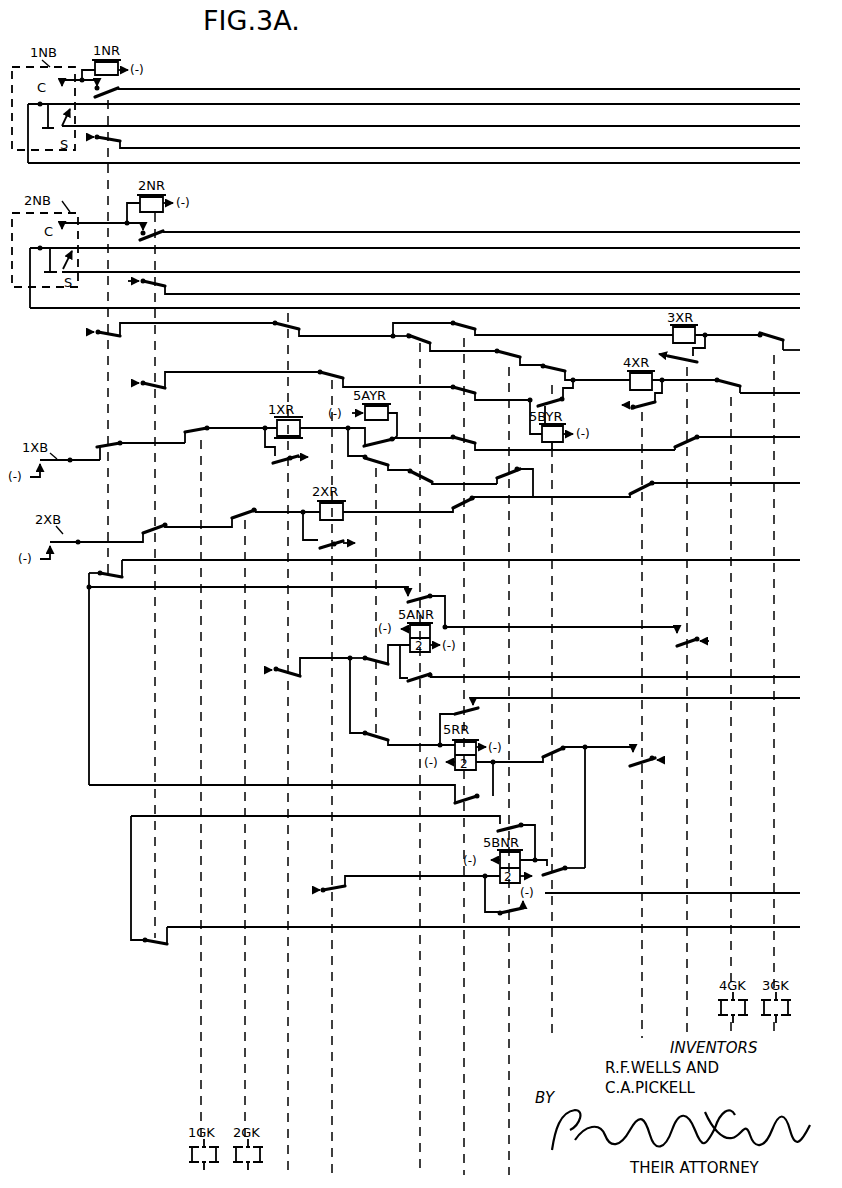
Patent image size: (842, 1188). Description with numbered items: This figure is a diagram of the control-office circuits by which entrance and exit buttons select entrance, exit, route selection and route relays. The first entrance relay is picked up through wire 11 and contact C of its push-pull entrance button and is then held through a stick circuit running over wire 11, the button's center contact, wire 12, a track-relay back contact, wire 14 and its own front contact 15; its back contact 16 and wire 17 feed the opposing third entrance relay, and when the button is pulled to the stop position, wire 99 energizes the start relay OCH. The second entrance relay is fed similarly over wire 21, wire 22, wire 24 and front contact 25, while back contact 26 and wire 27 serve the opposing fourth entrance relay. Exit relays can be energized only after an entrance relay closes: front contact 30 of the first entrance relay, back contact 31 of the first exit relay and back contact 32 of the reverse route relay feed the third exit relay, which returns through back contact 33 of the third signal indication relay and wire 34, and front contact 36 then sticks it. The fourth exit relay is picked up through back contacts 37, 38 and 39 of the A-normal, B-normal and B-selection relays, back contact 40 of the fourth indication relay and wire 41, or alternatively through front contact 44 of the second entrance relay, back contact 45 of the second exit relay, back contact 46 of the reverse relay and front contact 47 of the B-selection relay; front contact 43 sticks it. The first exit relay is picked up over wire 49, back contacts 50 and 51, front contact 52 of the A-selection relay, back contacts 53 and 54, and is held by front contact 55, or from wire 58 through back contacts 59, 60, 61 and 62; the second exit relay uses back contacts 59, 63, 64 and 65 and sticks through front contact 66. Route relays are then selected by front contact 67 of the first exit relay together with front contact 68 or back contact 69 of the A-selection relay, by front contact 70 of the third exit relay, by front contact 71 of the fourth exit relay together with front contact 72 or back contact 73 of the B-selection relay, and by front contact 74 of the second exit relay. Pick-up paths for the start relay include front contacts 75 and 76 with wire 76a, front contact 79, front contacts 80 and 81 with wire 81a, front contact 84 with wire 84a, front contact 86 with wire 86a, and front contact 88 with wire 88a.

The wire 11 is at (794, 164).
The wire 12 is at (774, 104).
The wire 14 is at (792, 92).
The front contact of relay 1NR 15 is at (122, 91).
The back contact of relay 1NR 16 is at (124, 141).
The wire 17 is at (800, 148).
The wire 99 is at (748, 126).
The wire 21 is at (776, 311).
The wire 22 is at (777, 250).
The wire 24 is at (792, 226).
The front contact of relay 2NR 25 is at (160, 234).
The back contact of relay 2NR 26 is at (135, 292).
The wire 27 is at (770, 296).
The front contact of relay 1NR 30 is at (169, 342).
The back contact of relay 1XR 31 is at (280, 327).
The back contact of relay 5RR 32 is at (533, 335).
The back contact of relay 3GK 33 is at (771, 338).
The wire 34 is at (795, 352).
The front contact of relay 3XR 36 is at (680, 358).
The back contact of relay 5ANR 37 is at (444, 350).
The back contact of relay 5BNR 38 is at (510, 363).
The back contact of relay 5BYR 39 is at (545, 364).
The back contact of relay 4GK 40 is at (696, 392).
The wire 41 is at (796, 394).
The front contact of relay 4XR 43 is at (628, 403).
The front contact of relay 2NR 44 is at (215, 392).
The back contact of relay 2XR 45 is at (322, 375).
The back contact of relay 5RR 46 is at (482, 398).
The front contact of relay 5BYR 47 is at (546, 401).
The wire 49 is at (796, 437).
The back contact of relay 3XR 50 is at (687, 443).
The back contact of relay 5RR 51 is at (457, 442).
The front contact of relay 5AYR 52 is at (384, 442).
The back contact of relay 1GK 53 is at (202, 432).
The back contact of relay 1NR 54 is at (141, 457).
The front contact of relay 1XR 55 is at (294, 455).
The wire 58 is at (787, 484).
The back contact of relay 4XR 59 is at (600, 497).
The back contact of relay 5BNR 60 is at (515, 482).
The back contact of relay 5ANR 61 is at (411, 481).
The back contact of relay 5AYR 62 is at (379, 455).
The back contact of relay 5RR 63 is at (470, 501).
The back contact of relay 2GK 64 is at (242, 524).
The back contact of relay 2NR 65 is at (115, 538).
The front contact of relay 2XR 66 is at (337, 532).
The front contact of relay 1XR 67 is at (288, 677).
The front contact of relay 5AYR 68 is at (366, 652).
The back contact of relay 5AYR 69 is at (402, 708).
The front contact of relay 3XR 70 is at (677, 645).
The front contact of relay 4XR 71 is at (653, 766).
The front contact of relay 5BYR 72 is at (558, 874).
The back contact of relay 5BYR 73 is at (554, 761).
The front contact of relay 2XR 74 is at (328, 891).
The front contact of relay 5ANR 75 is at (424, 593).
The front contact of relay 1NR 76 is at (104, 572).
The wire 76a is at (768, 563).
The front contact of relay 5RR 79 is at (472, 806).
The front contact of relay 5BNR 80 is at (533, 819).
The front contact of relay 2NR 81 is at (150, 949).
The wire 81a is at (771, 928).
The front contact of relay 5ANR 84 is at (410, 680).
The wire 84a is at (770, 670).
The front contact of relay 5RR 86 is at (458, 709).
The wire 86a is at (768, 702).
The front contact of relay 5BNR 88 is at (528, 912).
The wire 88a is at (773, 894).